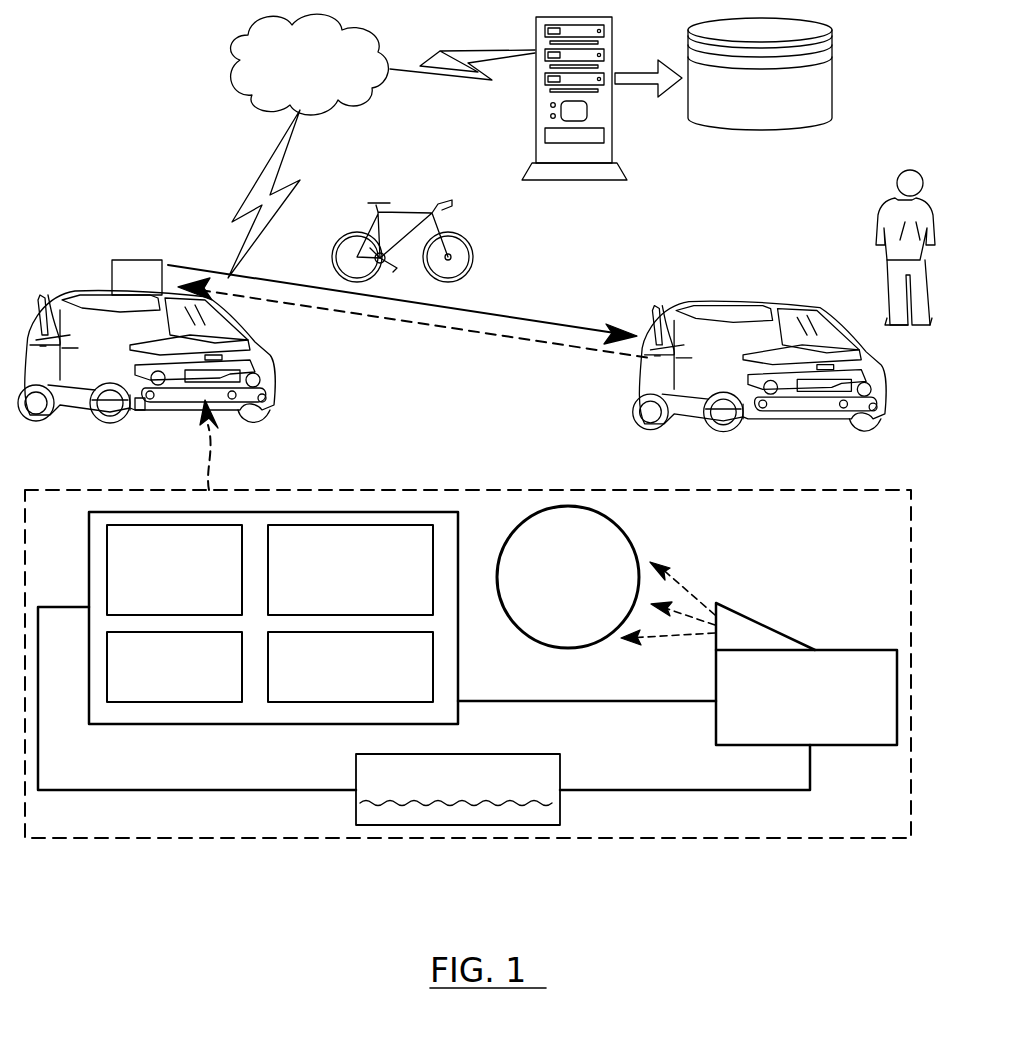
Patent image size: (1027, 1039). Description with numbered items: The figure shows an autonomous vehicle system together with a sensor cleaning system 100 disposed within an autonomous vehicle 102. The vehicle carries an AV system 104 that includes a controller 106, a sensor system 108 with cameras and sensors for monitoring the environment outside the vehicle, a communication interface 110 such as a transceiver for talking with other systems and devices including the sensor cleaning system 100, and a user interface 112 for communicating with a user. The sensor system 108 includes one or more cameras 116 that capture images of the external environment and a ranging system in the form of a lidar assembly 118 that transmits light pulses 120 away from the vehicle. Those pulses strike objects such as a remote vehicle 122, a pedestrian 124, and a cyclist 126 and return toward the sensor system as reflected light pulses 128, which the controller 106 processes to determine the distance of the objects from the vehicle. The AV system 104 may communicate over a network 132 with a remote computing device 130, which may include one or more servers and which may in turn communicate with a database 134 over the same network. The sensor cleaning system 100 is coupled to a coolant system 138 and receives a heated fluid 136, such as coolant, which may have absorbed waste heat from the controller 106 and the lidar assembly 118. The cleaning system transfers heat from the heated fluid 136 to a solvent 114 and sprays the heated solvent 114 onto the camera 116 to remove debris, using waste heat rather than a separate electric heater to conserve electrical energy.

The sensor cleaning system 100 is at (846, 650).
The autonomous vehicle 102 is at (88, 285).
The AV system 104 is at (296, 512).
The controller 106 is at (174, 667).
The sensor system 108 is at (174, 570).
The communication interface 110 is at (350, 570).
The user interface 112 is at (350, 667).
The solvent 114 is at (692, 598).
The camera 116 is at (628, 532).
The lidar assembly 118 is at (142, 260).
The light pulses 120 is at (566, 322).
The remote vehicle 122 is at (742, 306).
The pedestrian 124 is at (878, 222).
The cyclist 126 is at (410, 214).
The reflected light pulses 128 is at (535, 345).
The remote computing device 130 is at (536, 30).
The network 132 is at (228, 68).
The database 134 is at (830, 73).
The heated fluid 136 is at (490, 808).
The coolant system 138 is at (356, 800).